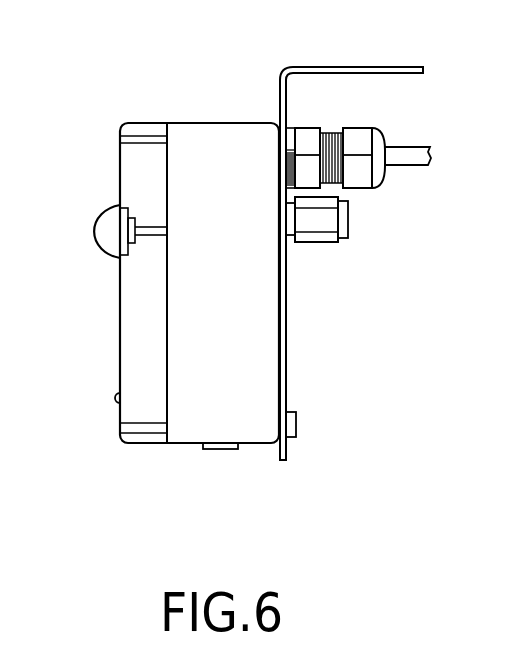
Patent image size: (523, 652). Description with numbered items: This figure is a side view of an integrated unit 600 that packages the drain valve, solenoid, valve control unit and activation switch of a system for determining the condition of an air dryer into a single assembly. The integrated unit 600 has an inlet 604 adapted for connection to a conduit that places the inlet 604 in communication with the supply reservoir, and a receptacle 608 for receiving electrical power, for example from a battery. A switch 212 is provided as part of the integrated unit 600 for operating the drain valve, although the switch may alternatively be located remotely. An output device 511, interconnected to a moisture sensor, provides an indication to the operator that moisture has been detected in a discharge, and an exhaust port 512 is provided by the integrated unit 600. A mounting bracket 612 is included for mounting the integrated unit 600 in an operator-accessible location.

The integrated unit 600 is at (288, 362).
The mounting bracket 612 is at (368, 67).
The receptacle 608 is at (382, 182).
The inlet 604 is at (345, 238).
The activation switch 212 is at (92, 245).
The output device 511 is at (117, 403).
The exhaust port 512 is at (230, 448).